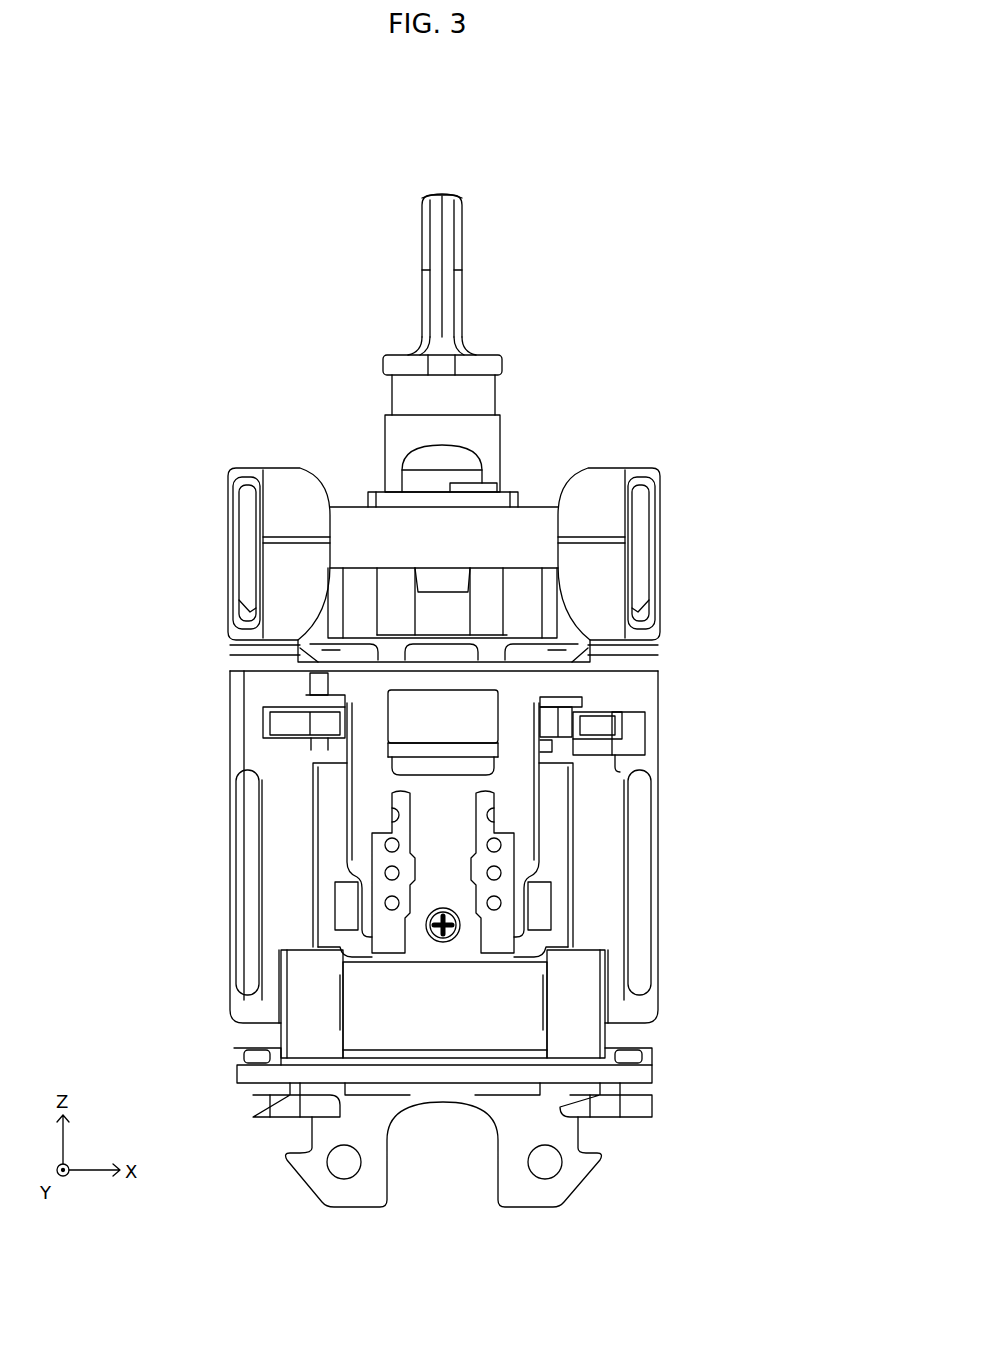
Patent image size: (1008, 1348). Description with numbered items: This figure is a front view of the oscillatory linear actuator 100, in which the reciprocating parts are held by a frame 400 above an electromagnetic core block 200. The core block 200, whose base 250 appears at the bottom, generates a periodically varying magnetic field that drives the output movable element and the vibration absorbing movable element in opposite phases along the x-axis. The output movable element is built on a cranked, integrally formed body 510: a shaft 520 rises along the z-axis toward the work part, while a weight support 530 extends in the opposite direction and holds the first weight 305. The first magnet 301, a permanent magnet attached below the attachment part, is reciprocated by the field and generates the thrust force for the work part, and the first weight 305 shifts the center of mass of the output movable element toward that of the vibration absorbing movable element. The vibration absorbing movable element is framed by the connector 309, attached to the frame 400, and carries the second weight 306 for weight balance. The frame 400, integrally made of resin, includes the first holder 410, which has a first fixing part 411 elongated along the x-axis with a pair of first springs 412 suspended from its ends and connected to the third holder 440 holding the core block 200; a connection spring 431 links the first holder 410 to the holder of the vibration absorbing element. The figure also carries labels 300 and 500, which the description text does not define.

The oscillatory linear actuator 100 is at (218, 158).
The electromagnetic core block 200 is at (622, 1226).
The base 250 is at (620, 1108).
The valve assembly 300 is at (270, 362).
The first magnet 301 is at (338, 723).
The first weight 305 is at (380, 993).
The second weight 306 is at (430, 503).
The connector 309 is at (402, 604).
The frame 400 is at (790, 600).
The first holder 410 is at (205, 945).
The first fixing part 411 is at (460, 785).
The first springs 412 is at (238, 860).
The connection spring 431 is at (288, 492).
The third holder 440 is at (312, 982).
The actuator 500 is at (332, 783).
The body 510 is at (363, 648).
The shaft 520 is at (437, 237).
The weight support 530 is at (357, 802).